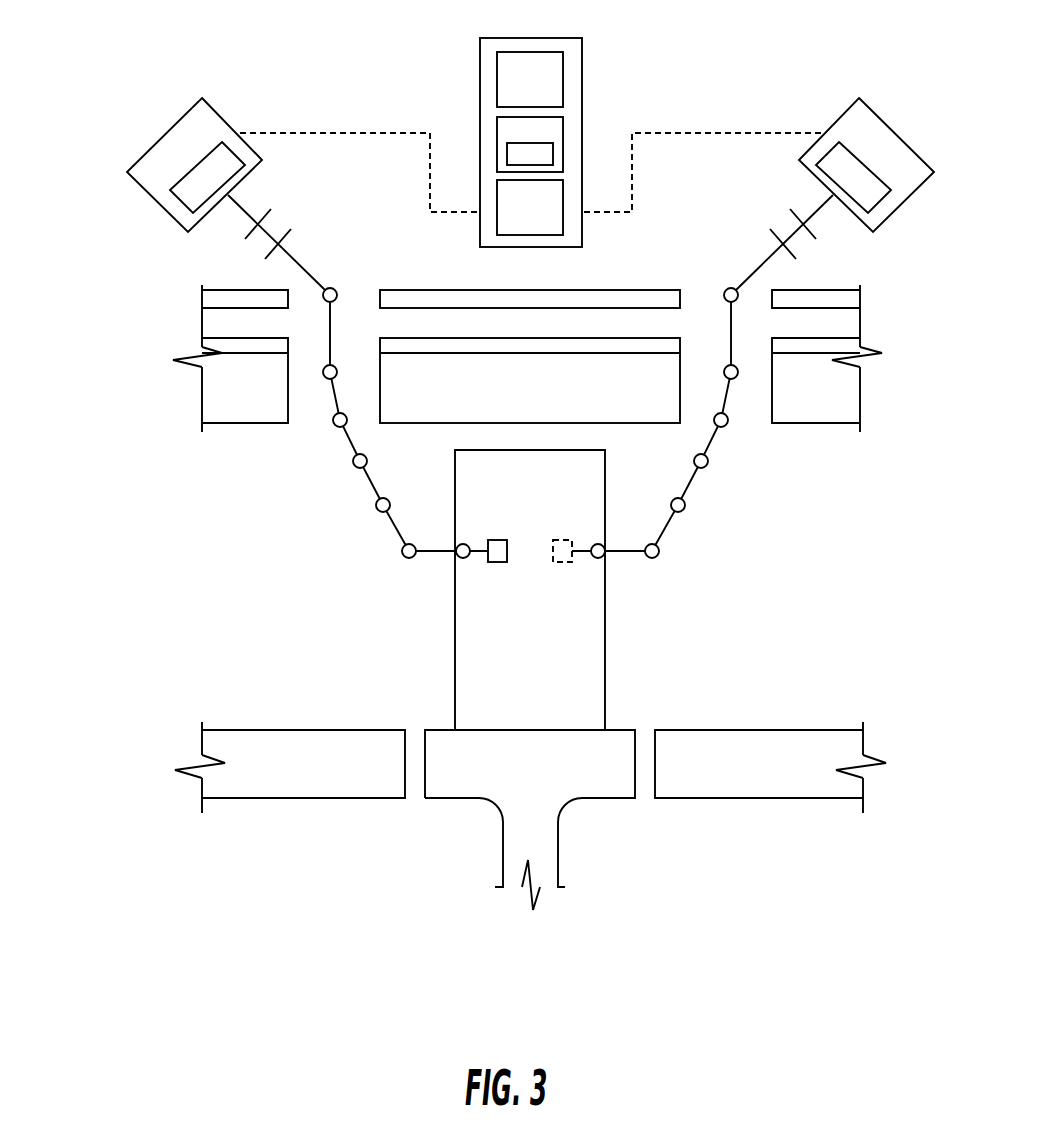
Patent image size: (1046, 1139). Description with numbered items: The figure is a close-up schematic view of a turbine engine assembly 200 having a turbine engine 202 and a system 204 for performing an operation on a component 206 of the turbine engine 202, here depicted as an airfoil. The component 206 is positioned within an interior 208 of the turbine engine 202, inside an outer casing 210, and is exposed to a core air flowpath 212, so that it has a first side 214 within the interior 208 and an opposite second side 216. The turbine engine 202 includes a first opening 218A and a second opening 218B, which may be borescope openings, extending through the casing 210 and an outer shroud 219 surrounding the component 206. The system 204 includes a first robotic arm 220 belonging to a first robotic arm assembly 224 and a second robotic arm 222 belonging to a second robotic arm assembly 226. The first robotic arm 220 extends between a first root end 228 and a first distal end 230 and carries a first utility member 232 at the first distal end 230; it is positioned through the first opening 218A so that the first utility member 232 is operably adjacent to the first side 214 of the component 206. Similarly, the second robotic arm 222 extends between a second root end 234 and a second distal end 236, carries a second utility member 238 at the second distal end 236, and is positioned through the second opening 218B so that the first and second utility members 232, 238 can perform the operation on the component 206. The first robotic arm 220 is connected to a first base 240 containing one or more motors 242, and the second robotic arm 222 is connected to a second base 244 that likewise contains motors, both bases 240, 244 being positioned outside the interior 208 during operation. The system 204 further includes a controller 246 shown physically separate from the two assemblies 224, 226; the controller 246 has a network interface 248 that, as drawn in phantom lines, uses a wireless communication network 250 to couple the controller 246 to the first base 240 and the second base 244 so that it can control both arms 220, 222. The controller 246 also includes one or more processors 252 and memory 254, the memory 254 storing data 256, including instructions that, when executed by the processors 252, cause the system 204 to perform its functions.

The turbine engine assembly 200 is at (83, 110).
The turbine engine 202 is at (122, 420).
The system 204 is at (850, 172).
The component 206 is at (542, 590).
The interior 208 is at (530, 362).
The outer casing 210 is at (615, 296).
The core air flowpath 212 is at (260, 612).
The first side 214 is at (480, 630).
The second side 216 is at (577, 610).
The first opening 218A is at (356, 288).
The second opening 218B is at (703, 310).
The outer shroud 219 is at (445, 413).
The first robotic arm 220 is at (377, 385).
The second robotic arm 222 is at (691, 380).
The first robotic arm assembly 224 is at (196, 189).
The second robotic arm assembly 226 is at (862, 252).
The first root end 228 is at (218, 218).
The first distal end 230 is at (495, 533).
The first utility member 232 is at (498, 562).
The second root end 234 is at (807, 205).
The second distal end 236 is at (562, 535).
The second utility member 238 is at (560, 562).
The first base 240 is at (165, 130).
The motors 242 is at (202, 190).
The second base 244 is at (898, 137).
The controller 246 is at (582, 53).
The network interface 248 is at (528, 235).
The wireless communication network 250 is at (370, 131).
The processors 252 is at (517, 80).
The memory 254 is at (485, 114).
The data 256 is at (507, 157).